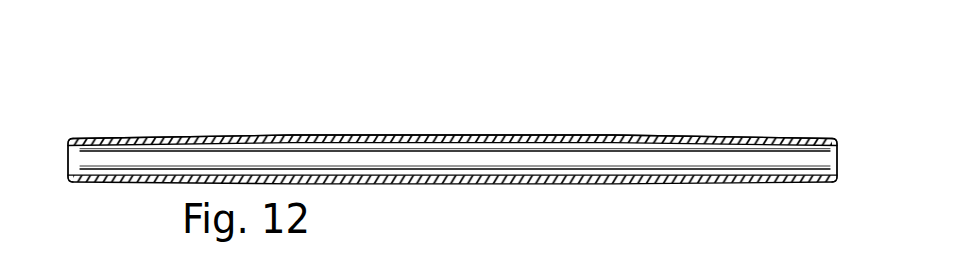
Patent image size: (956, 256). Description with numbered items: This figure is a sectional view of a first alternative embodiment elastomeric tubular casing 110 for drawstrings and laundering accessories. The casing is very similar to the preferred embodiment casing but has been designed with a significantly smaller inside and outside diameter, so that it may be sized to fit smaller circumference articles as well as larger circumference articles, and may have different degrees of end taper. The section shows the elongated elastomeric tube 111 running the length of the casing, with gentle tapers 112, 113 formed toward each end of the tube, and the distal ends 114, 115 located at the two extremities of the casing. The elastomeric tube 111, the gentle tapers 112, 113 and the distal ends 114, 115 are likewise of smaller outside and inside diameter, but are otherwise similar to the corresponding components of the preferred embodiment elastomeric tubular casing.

The elastomeric tubular casing 110 is at (586, 96).
The elastomeric tube 111 is at (449, 158).
The gentle taper 112 is at (784, 139).
The gentle taper 113 is at (93, 140).
The distal end 114 is at (835, 184).
The distal end 115 is at (71, 183).